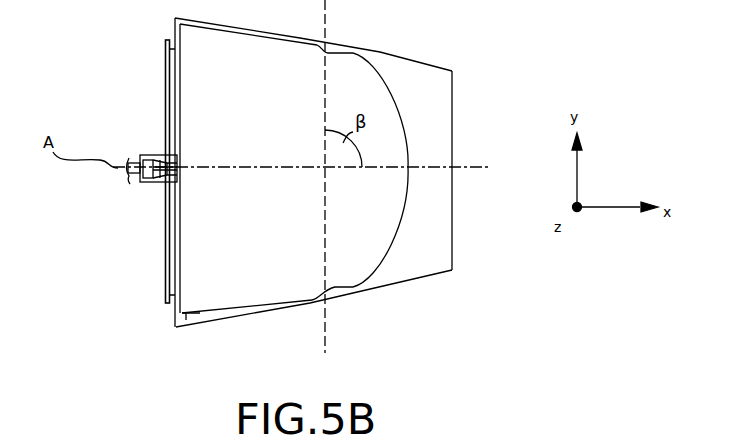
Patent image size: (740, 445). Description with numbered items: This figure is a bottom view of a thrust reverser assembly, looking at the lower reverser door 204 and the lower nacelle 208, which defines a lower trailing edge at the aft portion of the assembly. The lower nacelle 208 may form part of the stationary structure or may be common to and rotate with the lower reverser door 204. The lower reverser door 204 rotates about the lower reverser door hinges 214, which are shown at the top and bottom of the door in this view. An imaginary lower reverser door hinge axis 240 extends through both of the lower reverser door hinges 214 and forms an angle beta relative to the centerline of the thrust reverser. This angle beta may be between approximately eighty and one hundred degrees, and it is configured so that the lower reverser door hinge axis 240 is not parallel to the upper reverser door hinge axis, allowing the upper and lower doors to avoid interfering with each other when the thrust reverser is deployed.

The lower reverser door 204 is at (252, 146).
The lower nacelle 208 is at (438, 143).
The lower reverser door hinges 214 is at (325, 42).
The lower reverser door hinge axis 240 is at (327, 240).